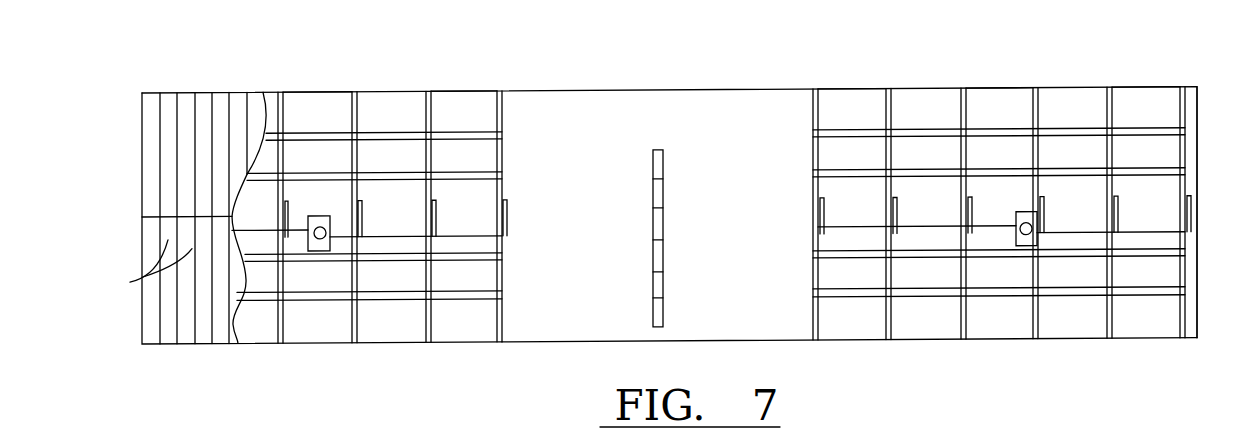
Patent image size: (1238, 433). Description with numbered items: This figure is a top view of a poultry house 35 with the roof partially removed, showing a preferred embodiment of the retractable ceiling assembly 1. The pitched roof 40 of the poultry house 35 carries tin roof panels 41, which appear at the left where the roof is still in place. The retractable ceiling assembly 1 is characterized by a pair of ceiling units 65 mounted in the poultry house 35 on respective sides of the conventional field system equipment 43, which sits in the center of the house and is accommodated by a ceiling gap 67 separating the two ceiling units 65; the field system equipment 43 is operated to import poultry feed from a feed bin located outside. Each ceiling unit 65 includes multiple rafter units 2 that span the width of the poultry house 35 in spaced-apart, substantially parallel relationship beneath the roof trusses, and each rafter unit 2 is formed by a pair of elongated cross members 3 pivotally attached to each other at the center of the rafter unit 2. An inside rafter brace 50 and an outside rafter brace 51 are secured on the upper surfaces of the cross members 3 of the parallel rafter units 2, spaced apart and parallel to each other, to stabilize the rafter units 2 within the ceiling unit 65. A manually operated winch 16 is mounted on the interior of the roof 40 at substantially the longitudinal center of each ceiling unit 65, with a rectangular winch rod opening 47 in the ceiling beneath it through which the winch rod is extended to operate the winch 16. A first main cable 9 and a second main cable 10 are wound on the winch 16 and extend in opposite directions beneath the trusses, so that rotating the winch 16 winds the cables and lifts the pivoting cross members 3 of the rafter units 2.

The retractable ceiling assembly 1 is at (626, 70).
The rafter units 2 is at (357, 349).
The cross members 3 is at (353, 124).
The first main cable 9 is at (396, 237).
The second main cable 10 is at (251, 233).
The winch 16 is at (314, 244).
The poultry house 35 is at (195, 89).
The pitched roof 40 is at (147, 141).
The tin roof panels 41 is at (131, 282).
The field system equipment 43 is at (653, 204).
The winch rod opening 47 is at (323, 213).
The inside rafter brace 50 is at (500, 177).
The outside rafter brace 51 is at (500, 137).
The ceiling units 65 is at (509, 109).
The ceiling gap 67 is at (766, 320).